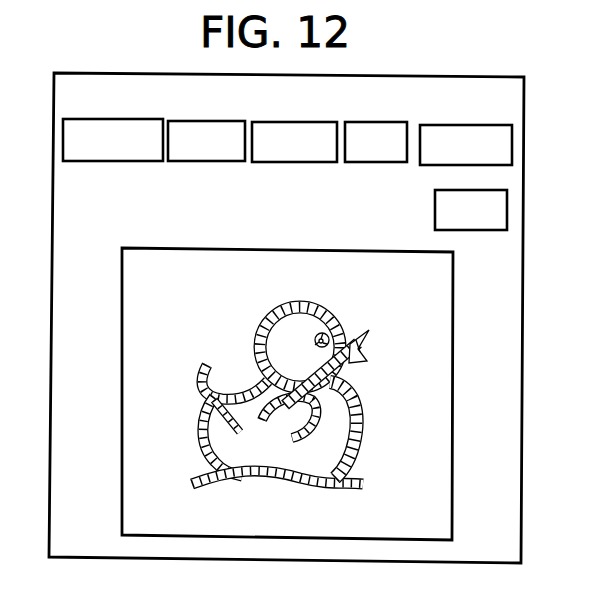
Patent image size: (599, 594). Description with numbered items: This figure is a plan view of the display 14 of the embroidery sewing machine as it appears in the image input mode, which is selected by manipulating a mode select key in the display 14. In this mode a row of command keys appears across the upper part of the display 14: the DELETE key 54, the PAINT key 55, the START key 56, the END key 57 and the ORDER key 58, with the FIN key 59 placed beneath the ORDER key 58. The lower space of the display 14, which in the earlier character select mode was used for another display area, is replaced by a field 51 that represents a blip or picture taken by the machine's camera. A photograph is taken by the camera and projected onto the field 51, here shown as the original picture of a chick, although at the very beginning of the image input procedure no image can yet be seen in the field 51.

The display 14 is at (523, 272).
The field 51 is at (453, 362).
The DELETE key 54 is at (113, 161).
The PAINT key 55 is at (222, 161).
The START key 56 is at (300, 162).
The END key 57 is at (377, 162).
The ORDER key 58 is at (472, 124).
The FIN key 59 is at (482, 230).